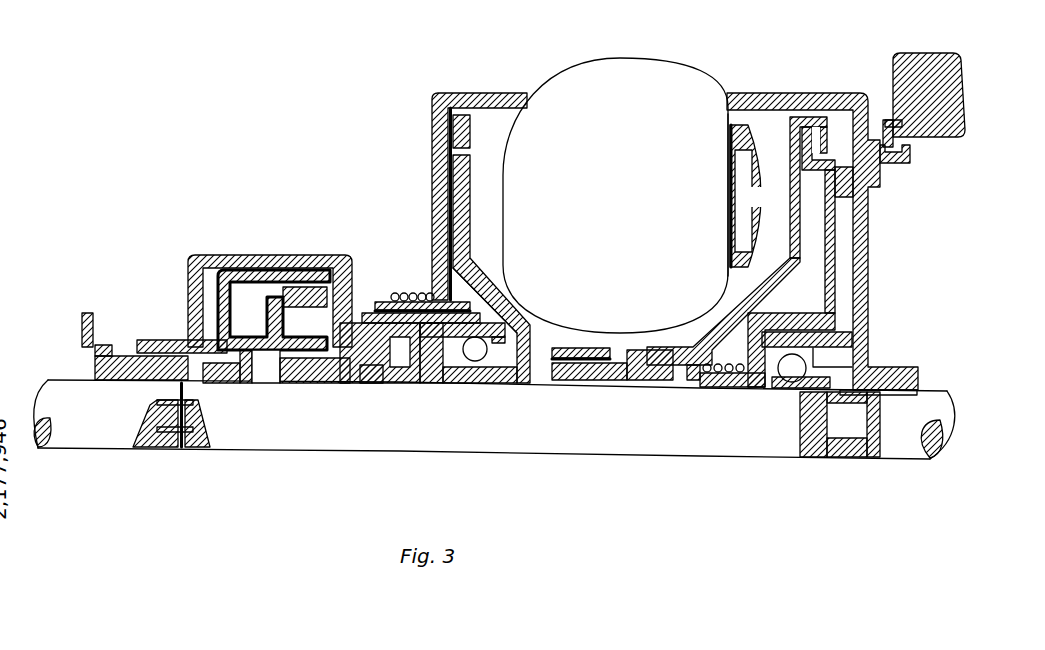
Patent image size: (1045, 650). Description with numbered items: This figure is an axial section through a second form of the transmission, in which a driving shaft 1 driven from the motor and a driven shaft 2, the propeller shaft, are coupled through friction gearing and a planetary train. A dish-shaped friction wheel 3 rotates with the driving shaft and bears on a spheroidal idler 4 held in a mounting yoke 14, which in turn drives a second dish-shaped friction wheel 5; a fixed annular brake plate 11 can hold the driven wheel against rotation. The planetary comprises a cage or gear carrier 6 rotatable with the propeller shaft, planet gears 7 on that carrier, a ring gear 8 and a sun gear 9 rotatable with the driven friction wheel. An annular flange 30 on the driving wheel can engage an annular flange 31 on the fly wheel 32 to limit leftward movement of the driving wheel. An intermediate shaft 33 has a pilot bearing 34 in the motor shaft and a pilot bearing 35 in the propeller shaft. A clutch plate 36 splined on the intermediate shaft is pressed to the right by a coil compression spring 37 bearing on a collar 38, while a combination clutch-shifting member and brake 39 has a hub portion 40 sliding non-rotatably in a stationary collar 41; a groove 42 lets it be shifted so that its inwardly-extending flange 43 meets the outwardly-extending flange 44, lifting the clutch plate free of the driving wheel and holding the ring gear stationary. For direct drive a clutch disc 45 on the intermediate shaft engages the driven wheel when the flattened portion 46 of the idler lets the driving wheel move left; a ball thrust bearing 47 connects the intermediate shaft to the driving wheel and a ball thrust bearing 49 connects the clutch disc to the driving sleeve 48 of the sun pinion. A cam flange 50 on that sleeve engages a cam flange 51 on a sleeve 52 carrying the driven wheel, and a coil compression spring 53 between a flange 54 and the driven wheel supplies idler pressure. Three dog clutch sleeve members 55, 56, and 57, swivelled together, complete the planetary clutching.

The driving shaft 1 is at (917, 452).
The driven shaft 2 is at (92, 437).
The dish-shaped friction wheel 3 is at (868, 232).
The spheroidal idler 4 is at (590, 64).
The second dish-shaped friction wheel 5 is at (432, 100).
The cage or gear carrier 6 is at (223, 263).
The planet gears 7 is at (303, 297).
The ring gear 8 is at (222, 292).
The sun gear 9 is at (322, 373).
The fixed annular brake plate 11 is at (463, 128).
The mounting yoke 14 is at (747, 143).
The annular flange 30 is at (910, 150).
The annular flange 31 is at (886, 120).
The fly wheel 32 is at (962, 82).
The intermediate shaft 33 is at (520, 455).
The pilot bearing 34 is at (855, 430).
The pilot bearing 35 is at (165, 420).
The clutch plate 36 is at (853, 257).
The coil compression spring 37 is at (707, 381).
The collar 38 is at (690, 382).
The combination clutch-shifting member and brake 39 is at (799, 130).
The hub portion 40 is at (593, 380).
The stationary collar 41 is at (610, 349).
The groove 42 is at (625, 372).
The inwardly-extending flange 43 is at (835, 135).
The outwardly-extending flange 44 is at (812, 127).
The clutch disc 45 is at (453, 176).
The flattened portion 46 is at (722, 97).
The ball thrust bearing 47 is at (790, 376).
The driving sleeve 48 is at (438, 363).
The ball thrust bearing 49 is at (477, 360).
The cam flange 50 is at (362, 340).
The cam flange 51 is at (393, 372).
The sleeve 52 is at (480, 315).
The coil compression spring 53 is at (419, 293).
The flange 54 is at (381, 338).
The dog clutch sleeve member 55 is at (240, 378).
The dog clutch sleeve member 56 is at (188, 380).
The dog clutch sleeve member 57 is at (130, 380).